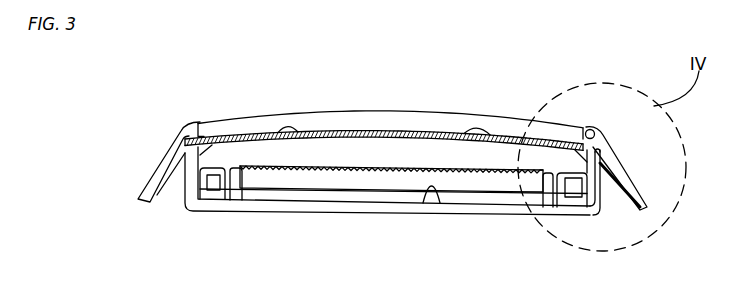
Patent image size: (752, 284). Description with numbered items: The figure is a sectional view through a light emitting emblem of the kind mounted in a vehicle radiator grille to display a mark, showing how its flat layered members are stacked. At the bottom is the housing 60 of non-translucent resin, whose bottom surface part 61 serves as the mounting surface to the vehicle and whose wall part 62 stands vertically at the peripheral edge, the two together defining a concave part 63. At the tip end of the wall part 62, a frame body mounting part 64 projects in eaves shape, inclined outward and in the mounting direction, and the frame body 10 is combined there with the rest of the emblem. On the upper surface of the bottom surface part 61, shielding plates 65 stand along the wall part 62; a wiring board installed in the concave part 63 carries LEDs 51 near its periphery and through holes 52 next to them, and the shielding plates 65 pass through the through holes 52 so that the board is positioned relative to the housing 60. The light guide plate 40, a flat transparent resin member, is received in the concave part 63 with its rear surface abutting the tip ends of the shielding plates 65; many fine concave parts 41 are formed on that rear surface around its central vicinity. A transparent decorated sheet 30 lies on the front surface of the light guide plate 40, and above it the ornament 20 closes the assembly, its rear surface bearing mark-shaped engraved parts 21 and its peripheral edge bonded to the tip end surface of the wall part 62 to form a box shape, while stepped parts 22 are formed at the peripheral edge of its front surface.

The frame body 10 is at (627, 160).
The ornament 20 is at (446, 112).
The engraved parts 21 is at (292, 125).
The stepped parts 22 is at (595, 128).
The sheet 30 is at (406, 130).
The light guide plate 40 is at (364, 150).
The fine concave parts 41 is at (327, 168).
The LEDs 51 is at (572, 198).
The through holes 52 is at (556, 184).
The housing 60 is at (341, 212).
The bottom surface part 61 is at (384, 204).
The wall part 62 is at (602, 192).
The concave part 63 is at (431, 195).
The frame body mounting part 64 is at (638, 186).
The shielding plates 65 is at (548, 183).